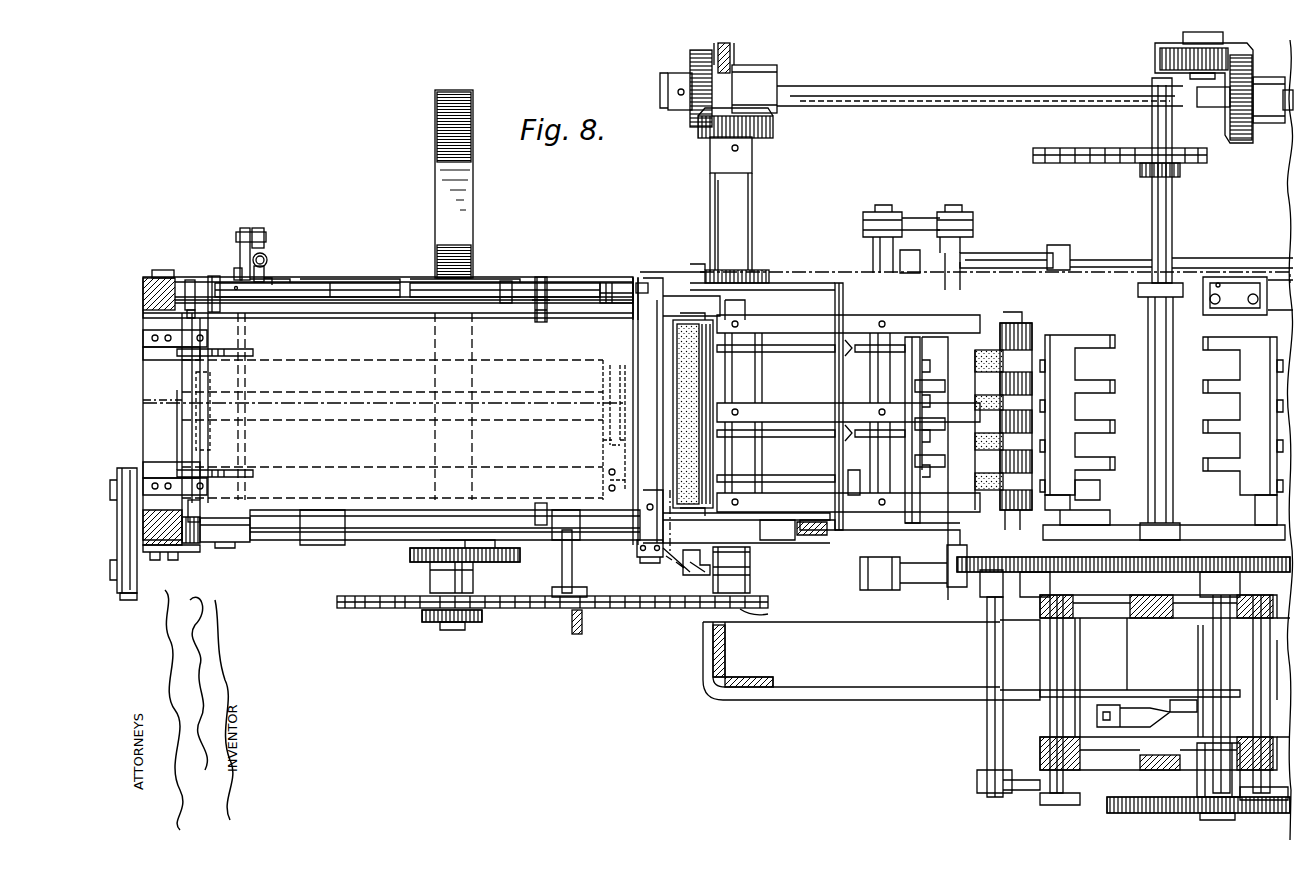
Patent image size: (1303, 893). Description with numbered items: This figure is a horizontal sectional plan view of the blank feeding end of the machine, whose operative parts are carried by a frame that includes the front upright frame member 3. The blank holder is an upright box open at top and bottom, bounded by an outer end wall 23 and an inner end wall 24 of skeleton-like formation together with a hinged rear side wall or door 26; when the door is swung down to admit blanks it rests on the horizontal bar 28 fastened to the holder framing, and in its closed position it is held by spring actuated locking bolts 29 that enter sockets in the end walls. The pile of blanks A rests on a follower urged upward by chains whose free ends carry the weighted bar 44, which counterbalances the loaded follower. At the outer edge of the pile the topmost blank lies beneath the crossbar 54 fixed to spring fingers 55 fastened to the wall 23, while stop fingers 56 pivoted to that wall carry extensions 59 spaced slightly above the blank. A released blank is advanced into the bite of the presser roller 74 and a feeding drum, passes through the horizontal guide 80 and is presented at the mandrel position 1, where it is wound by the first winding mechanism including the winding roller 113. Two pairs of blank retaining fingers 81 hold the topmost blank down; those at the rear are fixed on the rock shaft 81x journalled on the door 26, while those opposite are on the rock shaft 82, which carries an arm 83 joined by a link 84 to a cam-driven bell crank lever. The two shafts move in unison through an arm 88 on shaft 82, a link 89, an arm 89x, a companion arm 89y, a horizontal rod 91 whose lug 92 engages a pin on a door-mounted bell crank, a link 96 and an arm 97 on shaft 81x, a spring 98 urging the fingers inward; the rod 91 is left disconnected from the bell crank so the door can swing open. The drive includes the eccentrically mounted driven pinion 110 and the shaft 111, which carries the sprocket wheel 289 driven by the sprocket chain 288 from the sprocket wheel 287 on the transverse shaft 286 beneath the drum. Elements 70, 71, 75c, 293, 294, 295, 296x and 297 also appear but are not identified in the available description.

The forming mandrel position 1 is at (725, 210).
The front upright frame member 3 is at (851, 661).
The outer end wall 23 is at (162, 425).
The inner end wall 24 is at (648, 411).
The movable rear side wall or door 26 is at (318, 310).
The horizontal bar 28 is at (466, 247).
The spring actuated locking bolts 29 is at (640, 282).
The weighted bar 44 is at (555, 362).
The crossbar 54 is at (205, 395).
The spring fingers 55 is at (178, 338).
The stop fingers 56 is at (175, 352).
The extensions 59 is at (250, 352).
The latch bracket 70 is at (654, 526).
The spring 71 is at (672, 575).
The presser roller 74 is at (690, 378).
The stop pin 75c is at (852, 482).
The horizontal guide 80 is at (812, 330).
The blank retaining fingers 81 is at (537, 318).
The rock shaft 81x is at (368, 300).
The rock shaft 82 is at (392, 528).
The arm 83 is at (565, 570).
The link 84 is at (583, 620).
The arm 88 is at (132, 470).
The link 89 is at (138, 560).
The arm 89x is at (133, 590).
The arm 89y is at (228, 548).
The horizontal rod 91 is at (234, 270).
The lug 92 is at (265, 280).
The link 96 is at (258, 232).
The arm 97 is at (240, 248).
The spring 98 is at (267, 260).
The driven spur pinion 110 is at (467, 566).
The rotary shaft 111 is at (445, 626).
The winding roller 113 is at (1017, 325).
The horizontal transverse shaft 286 is at (768, 616).
The sprocket wheel 287 is at (757, 598).
The sprocket chain 288 is at (649, 627).
The sprocket wheel 289 is at (400, 609).
The bevel gear 293 is at (765, 134).
The bevel gear 294 is at (692, 110).
The drive shaft 295 is at (958, 107).
The hub 296x is at (1233, 118).
The bevel gear 297 is at (1163, 57).
The blanks A is at (384, 406).